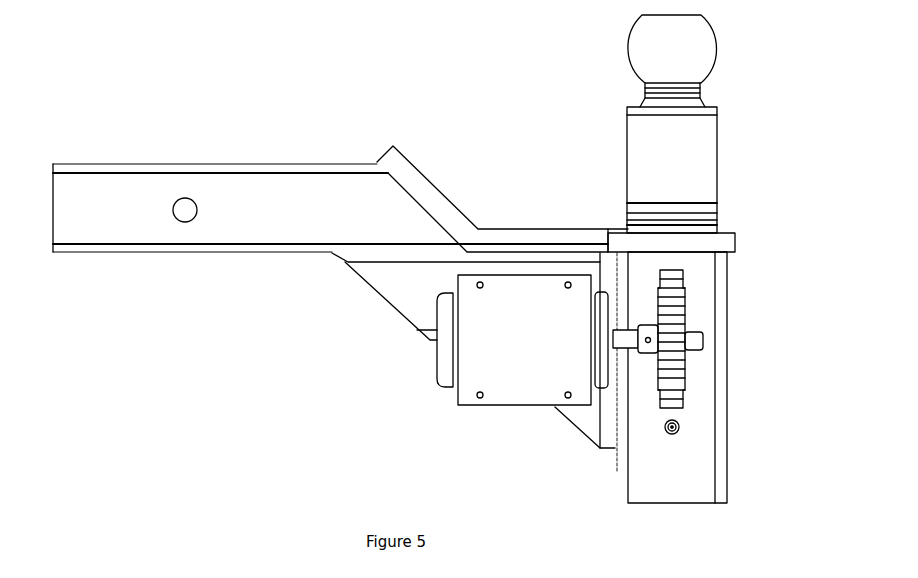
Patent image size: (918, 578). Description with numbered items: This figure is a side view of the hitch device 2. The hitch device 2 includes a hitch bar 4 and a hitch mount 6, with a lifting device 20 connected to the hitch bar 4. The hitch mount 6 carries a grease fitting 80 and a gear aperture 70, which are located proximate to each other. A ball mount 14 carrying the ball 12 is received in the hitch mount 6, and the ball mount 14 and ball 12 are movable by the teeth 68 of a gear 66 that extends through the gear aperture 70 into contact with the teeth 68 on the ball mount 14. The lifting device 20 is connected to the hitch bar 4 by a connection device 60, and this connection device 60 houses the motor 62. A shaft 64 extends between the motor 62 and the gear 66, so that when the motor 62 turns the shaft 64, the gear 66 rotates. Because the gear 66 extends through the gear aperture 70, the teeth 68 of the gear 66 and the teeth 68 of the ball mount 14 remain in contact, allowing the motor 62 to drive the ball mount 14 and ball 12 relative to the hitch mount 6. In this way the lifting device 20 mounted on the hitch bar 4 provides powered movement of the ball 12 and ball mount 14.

The hitch device 2 is at (276, 45).
The hitch bar 4 is at (278, 180).
The hitch mount 6 is at (697, 482).
The ball 12 is at (663, 40).
The ball mount 14 is at (627, 147).
The lifting device 20 is at (403, 417).
The connection device 60 is at (532, 345).
The motor 62 is at (447, 356).
The shaft 64 is at (628, 347).
The gear 66 is at (673, 260).
The teeth 68 is at (718, 211).
The gear aperture 70 is at (697, 297).
The grease fitting 80 is at (679, 427).